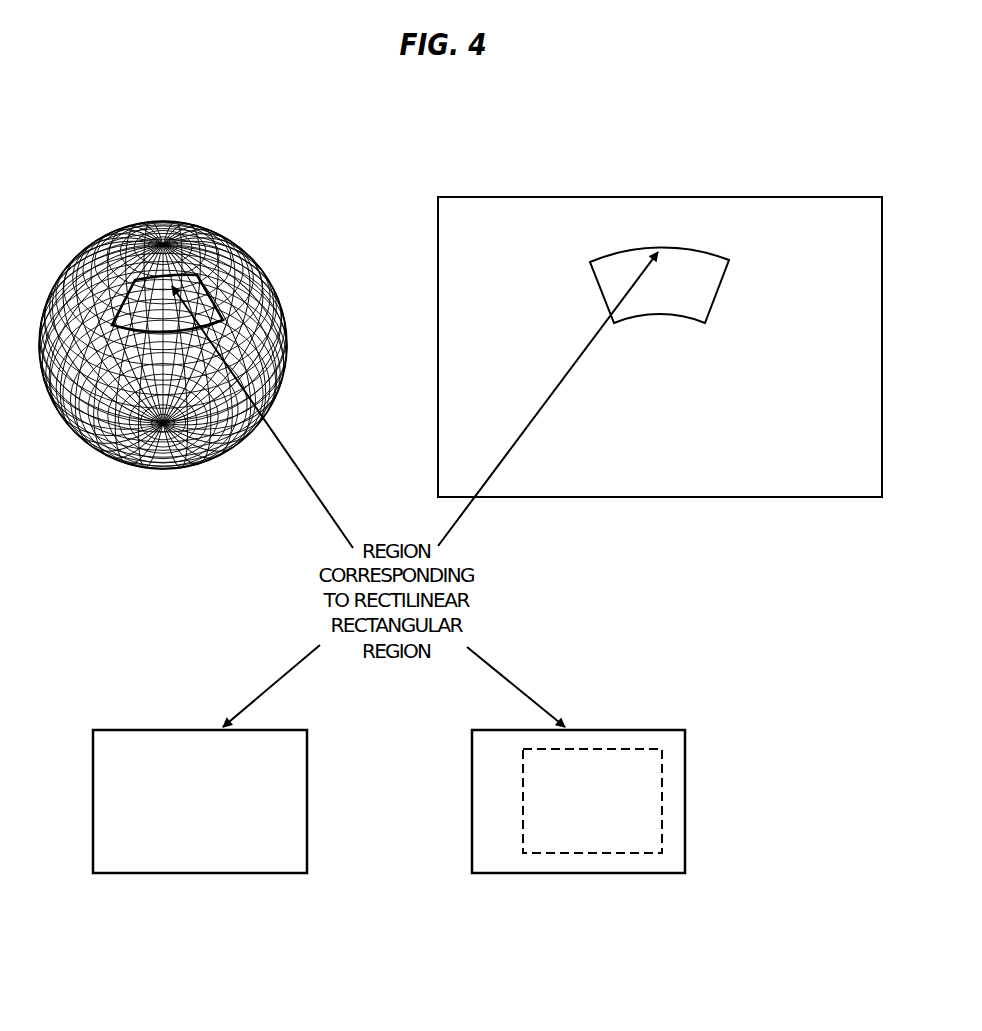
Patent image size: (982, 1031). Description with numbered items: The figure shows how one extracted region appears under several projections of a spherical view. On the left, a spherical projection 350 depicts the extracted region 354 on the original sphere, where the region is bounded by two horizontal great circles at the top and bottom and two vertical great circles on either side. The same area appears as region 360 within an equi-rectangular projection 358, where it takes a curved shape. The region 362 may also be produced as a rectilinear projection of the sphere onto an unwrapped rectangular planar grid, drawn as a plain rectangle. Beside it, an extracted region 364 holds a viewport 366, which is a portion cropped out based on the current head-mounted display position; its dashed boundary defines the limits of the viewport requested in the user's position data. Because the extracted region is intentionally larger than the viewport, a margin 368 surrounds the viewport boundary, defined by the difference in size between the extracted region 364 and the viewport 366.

The spherical projection 350 is at (112, 189).
The extracted region 354 is at (130, 322).
The equi-rectangular projection 358 is at (795, 197).
The region 360 is at (660, 297).
The region 362 is at (128, 729).
The extracted region 364 is at (685, 753).
The viewport 366 is at (637, 749).
The margin 368 is at (675, 830).